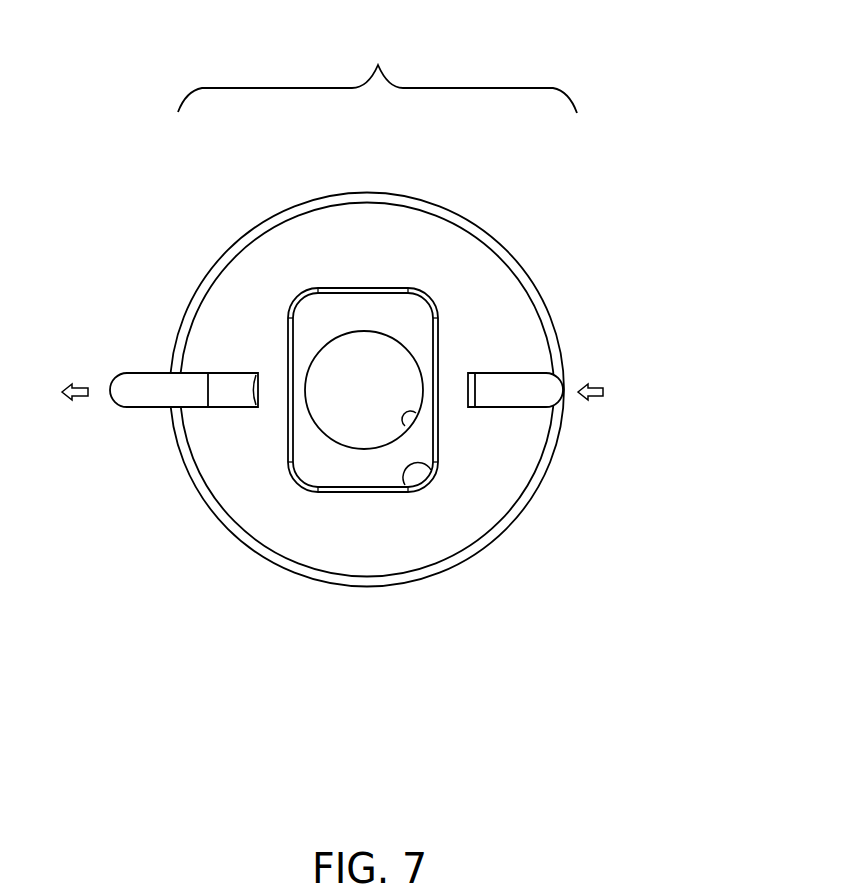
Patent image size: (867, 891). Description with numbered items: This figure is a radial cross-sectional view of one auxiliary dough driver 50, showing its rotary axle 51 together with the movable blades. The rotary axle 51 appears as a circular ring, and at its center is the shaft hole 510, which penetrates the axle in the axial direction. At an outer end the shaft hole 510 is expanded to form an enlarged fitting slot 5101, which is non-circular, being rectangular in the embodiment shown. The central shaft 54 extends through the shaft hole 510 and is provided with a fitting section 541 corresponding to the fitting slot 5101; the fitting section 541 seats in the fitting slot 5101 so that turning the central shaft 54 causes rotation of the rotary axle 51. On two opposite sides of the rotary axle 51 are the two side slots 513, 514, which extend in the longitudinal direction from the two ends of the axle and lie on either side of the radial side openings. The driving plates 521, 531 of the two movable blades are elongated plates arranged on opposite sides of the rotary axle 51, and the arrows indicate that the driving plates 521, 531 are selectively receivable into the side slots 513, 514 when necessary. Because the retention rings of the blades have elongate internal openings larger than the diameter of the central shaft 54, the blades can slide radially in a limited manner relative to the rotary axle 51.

The auxiliary dough driver 50 is at (377, 62).
The rotary axle 51 is at (297, 220).
The side slot 513 is at (228, 387).
The side slot 514 is at (478, 373).
The driving plate 521 is at (123, 390).
The driving plate 531 is at (558, 393).
The fitting section 541 is at (413, 328).
The central shaft 54 is at (368, 363).
The shaft hole 510 is at (415, 413).
The fitting slot 5101 is at (428, 475).